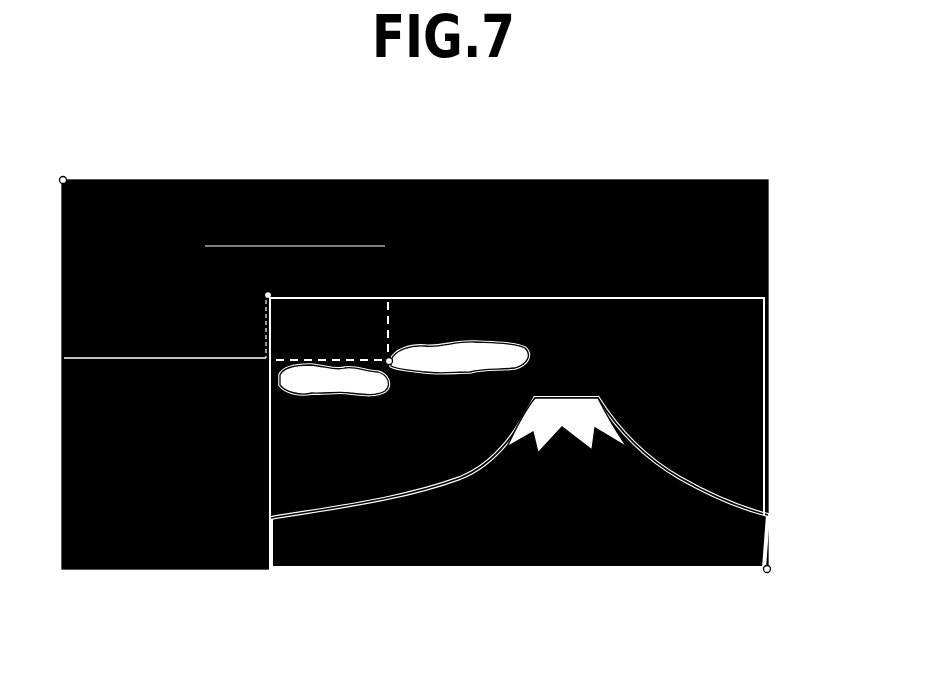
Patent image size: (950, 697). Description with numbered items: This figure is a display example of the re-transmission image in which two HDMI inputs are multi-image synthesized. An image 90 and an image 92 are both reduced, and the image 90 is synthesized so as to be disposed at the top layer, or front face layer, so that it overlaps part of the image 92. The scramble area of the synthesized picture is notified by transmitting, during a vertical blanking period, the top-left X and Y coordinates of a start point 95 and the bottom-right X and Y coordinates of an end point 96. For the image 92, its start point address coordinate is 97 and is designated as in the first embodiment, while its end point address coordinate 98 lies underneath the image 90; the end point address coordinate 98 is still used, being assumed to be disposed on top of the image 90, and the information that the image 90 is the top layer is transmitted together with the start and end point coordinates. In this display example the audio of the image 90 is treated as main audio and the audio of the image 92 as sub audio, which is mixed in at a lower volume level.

The image 90 is at (743, 368).
The image 92 is at (341, 181).
The start point 95 is at (266, 292).
The end point 96 is at (768, 573).
The start point address coordinate 97 is at (63, 176).
The end point address coordinate 98 is at (392, 360).